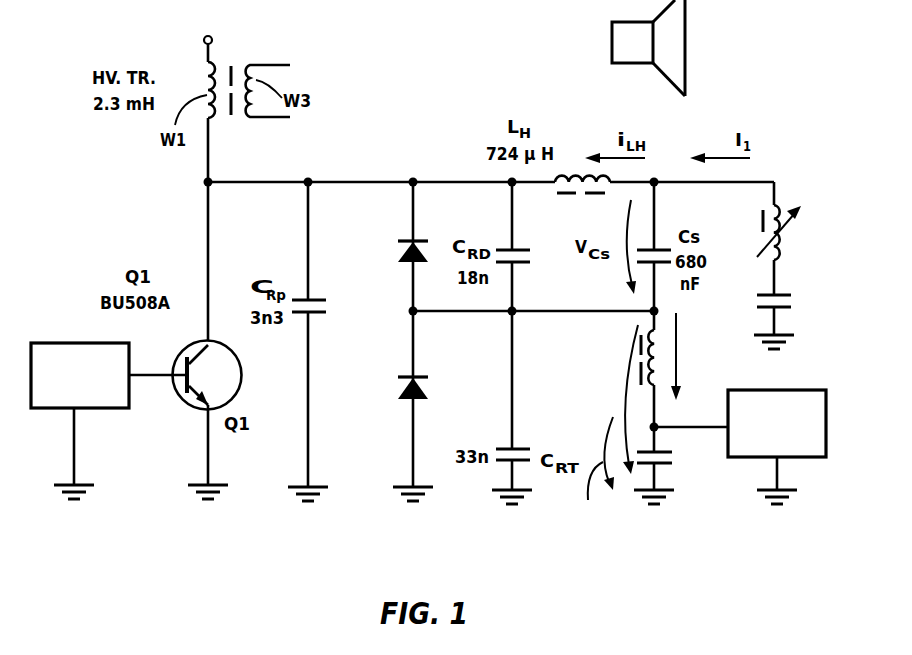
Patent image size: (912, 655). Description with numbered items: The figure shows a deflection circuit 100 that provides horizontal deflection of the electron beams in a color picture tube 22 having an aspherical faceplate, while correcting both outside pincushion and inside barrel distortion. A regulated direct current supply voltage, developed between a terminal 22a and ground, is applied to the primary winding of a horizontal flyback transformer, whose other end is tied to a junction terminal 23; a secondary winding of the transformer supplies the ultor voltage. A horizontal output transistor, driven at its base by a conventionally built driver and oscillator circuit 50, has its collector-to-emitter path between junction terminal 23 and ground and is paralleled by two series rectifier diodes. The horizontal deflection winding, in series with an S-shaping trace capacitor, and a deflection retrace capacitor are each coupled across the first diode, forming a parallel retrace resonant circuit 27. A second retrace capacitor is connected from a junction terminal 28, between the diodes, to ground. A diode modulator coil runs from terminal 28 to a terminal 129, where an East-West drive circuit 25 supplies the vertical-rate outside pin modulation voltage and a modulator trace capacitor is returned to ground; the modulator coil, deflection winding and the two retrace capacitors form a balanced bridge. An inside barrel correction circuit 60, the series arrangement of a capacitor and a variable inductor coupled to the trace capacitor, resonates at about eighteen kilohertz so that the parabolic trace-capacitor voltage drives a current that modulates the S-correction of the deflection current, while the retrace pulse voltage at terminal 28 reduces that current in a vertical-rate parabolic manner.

The color picture tube 22 is at (685, 45).
The terminal 22a is at (204, 37).
The junction terminal 23 is at (210, 178).
The East-West drive circuit 25 is at (828, 404).
The parallel retrace resonant circuit 27 is at (473, 212).
The junction terminal 28 is at (410, 313).
The driver and oscillator circuit 50 is at (80, 340).
The inside barrel correction circuit 60 is at (823, 152).
The deflection circuit 100 is at (461, 553).
The terminal 129 is at (652, 426).